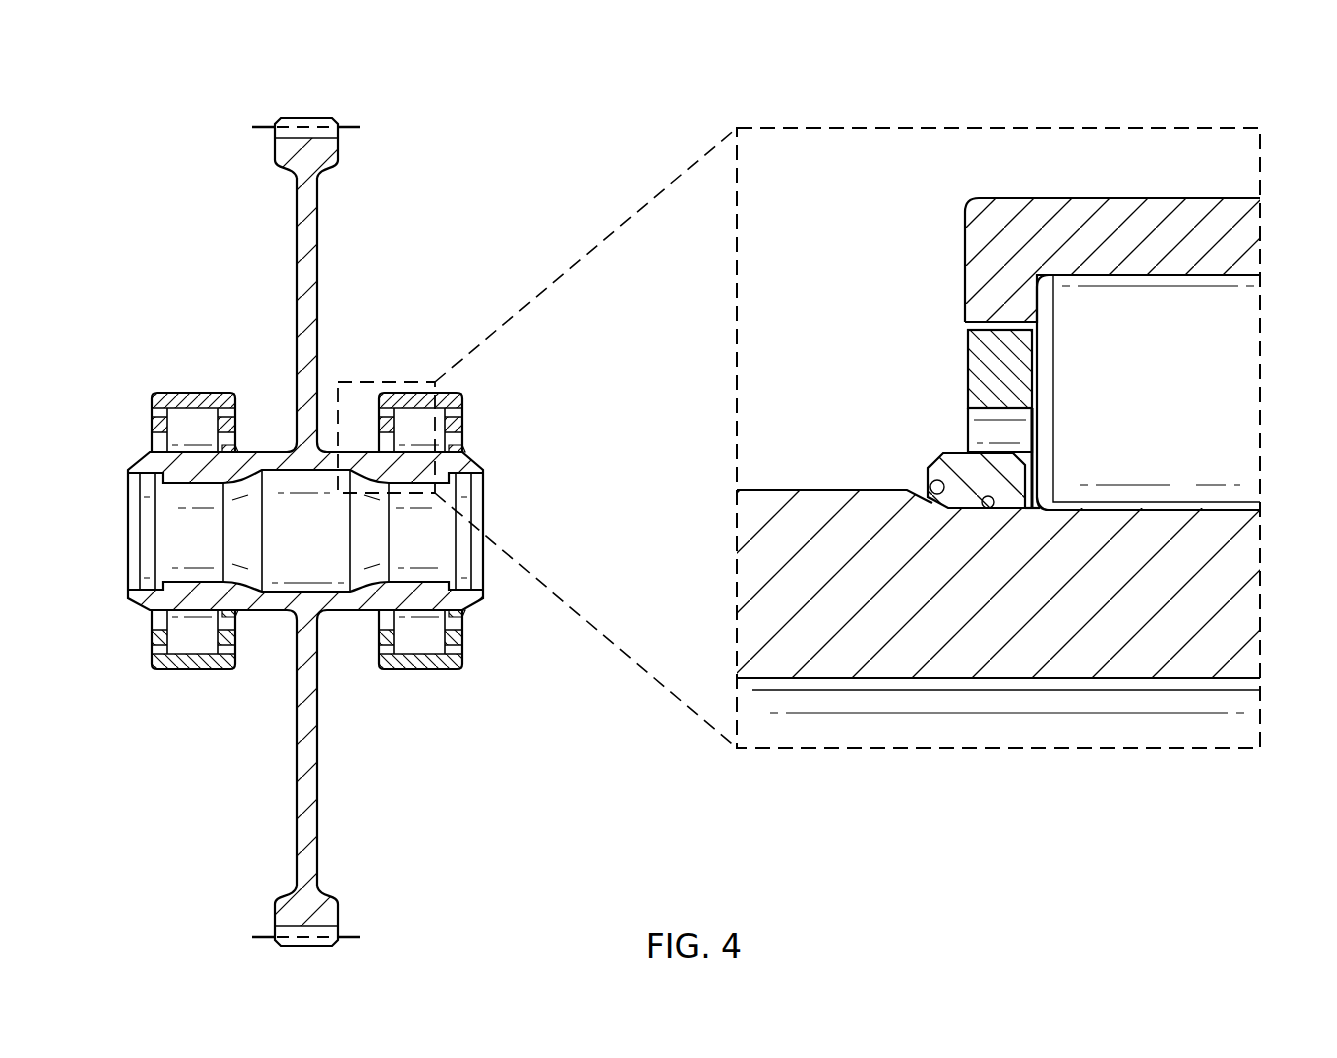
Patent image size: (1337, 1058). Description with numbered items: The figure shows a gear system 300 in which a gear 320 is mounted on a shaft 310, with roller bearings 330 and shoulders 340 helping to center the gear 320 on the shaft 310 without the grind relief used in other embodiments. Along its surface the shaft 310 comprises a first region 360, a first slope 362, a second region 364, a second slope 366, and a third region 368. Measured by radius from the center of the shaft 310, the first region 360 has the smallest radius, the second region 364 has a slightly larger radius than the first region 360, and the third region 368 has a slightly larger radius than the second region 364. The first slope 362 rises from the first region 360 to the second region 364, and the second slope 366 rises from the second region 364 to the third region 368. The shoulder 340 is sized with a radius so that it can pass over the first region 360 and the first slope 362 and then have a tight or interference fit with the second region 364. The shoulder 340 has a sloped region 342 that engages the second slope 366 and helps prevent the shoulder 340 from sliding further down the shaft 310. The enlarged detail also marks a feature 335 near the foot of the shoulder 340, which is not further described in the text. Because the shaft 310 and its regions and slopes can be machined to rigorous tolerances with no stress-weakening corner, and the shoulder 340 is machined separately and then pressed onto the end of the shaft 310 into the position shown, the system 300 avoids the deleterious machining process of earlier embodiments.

The gear system 300 is at (175, 100).
The shaft 310 is at (143, 456).
The gear 320 is at (306, 115).
The roller bearings 330 is at (1162, 197).
The shoulder 335 is at (1063, 512).
The shoulder 340 is at (965, 450).
The sloped region 342 is at (931, 508).
The first region 360 is at (1178, 510).
The first slope 362 is at (1043, 497).
The second region 364 is at (980, 508).
The second slope 366 is at (930, 470).
The third region 368 is at (870, 489).